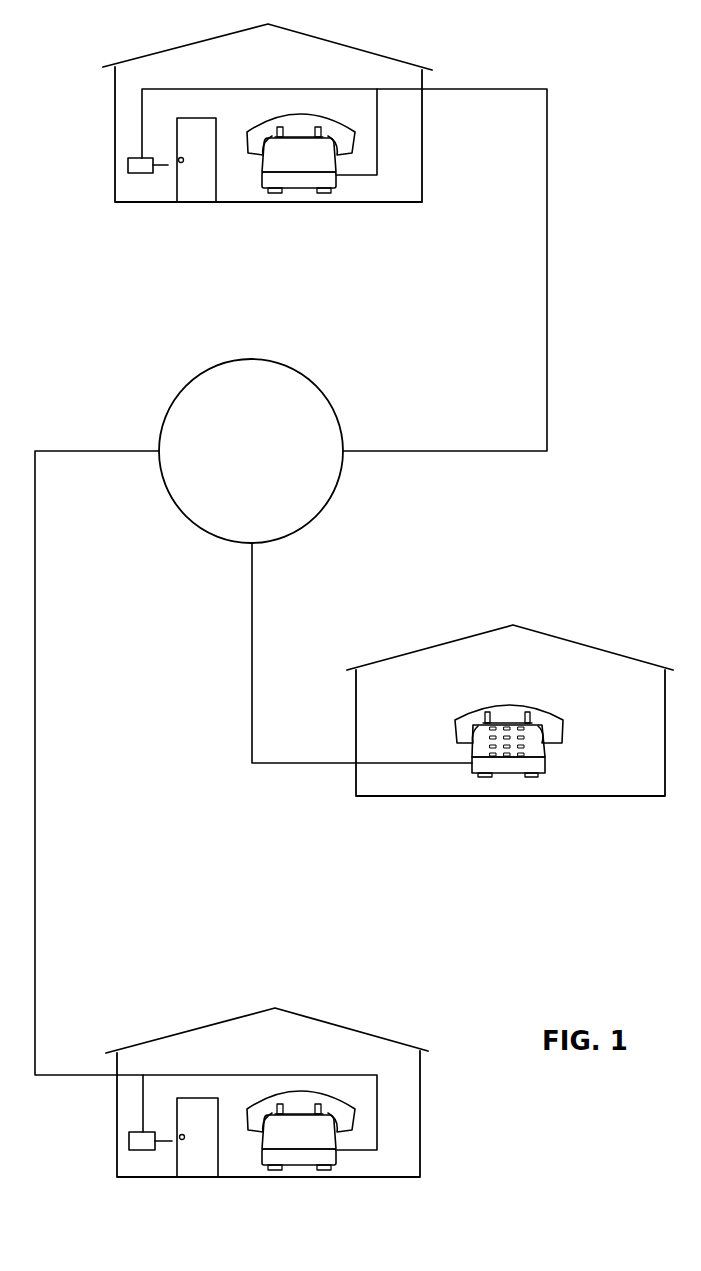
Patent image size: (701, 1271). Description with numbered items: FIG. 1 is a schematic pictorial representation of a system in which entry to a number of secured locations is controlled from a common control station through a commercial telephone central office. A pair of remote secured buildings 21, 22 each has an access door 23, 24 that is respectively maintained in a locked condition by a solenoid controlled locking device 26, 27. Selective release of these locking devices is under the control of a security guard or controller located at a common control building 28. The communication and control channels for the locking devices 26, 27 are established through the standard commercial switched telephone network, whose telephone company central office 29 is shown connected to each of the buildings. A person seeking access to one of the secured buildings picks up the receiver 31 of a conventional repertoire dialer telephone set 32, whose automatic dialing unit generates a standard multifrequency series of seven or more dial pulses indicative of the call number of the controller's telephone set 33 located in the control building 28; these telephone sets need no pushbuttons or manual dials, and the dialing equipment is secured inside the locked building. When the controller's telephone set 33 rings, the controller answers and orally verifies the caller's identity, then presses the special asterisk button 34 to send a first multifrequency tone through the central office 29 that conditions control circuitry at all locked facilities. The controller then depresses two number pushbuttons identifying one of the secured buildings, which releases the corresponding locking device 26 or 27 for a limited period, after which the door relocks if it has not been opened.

The remote secured building 21 is at (395, 60).
The remote secured building 22 is at (355, 1028).
The access door 23 is at (195, 192).
The access door 24 is at (202, 1170).
The solenoid controlled locking device 26 is at (128, 162).
The solenoid controlled locking device 27 is at (128, 1145).
The common control building 28 is at (593, 645).
The telephone company central office 29 is at (313, 378).
The receiver 31 is at (307, 117).
The repertoire dialer telephone set 32 is at (293, 190).
The controller's telephone set 33 is at (547, 762).
The asterisk button 34 is at (490, 752).